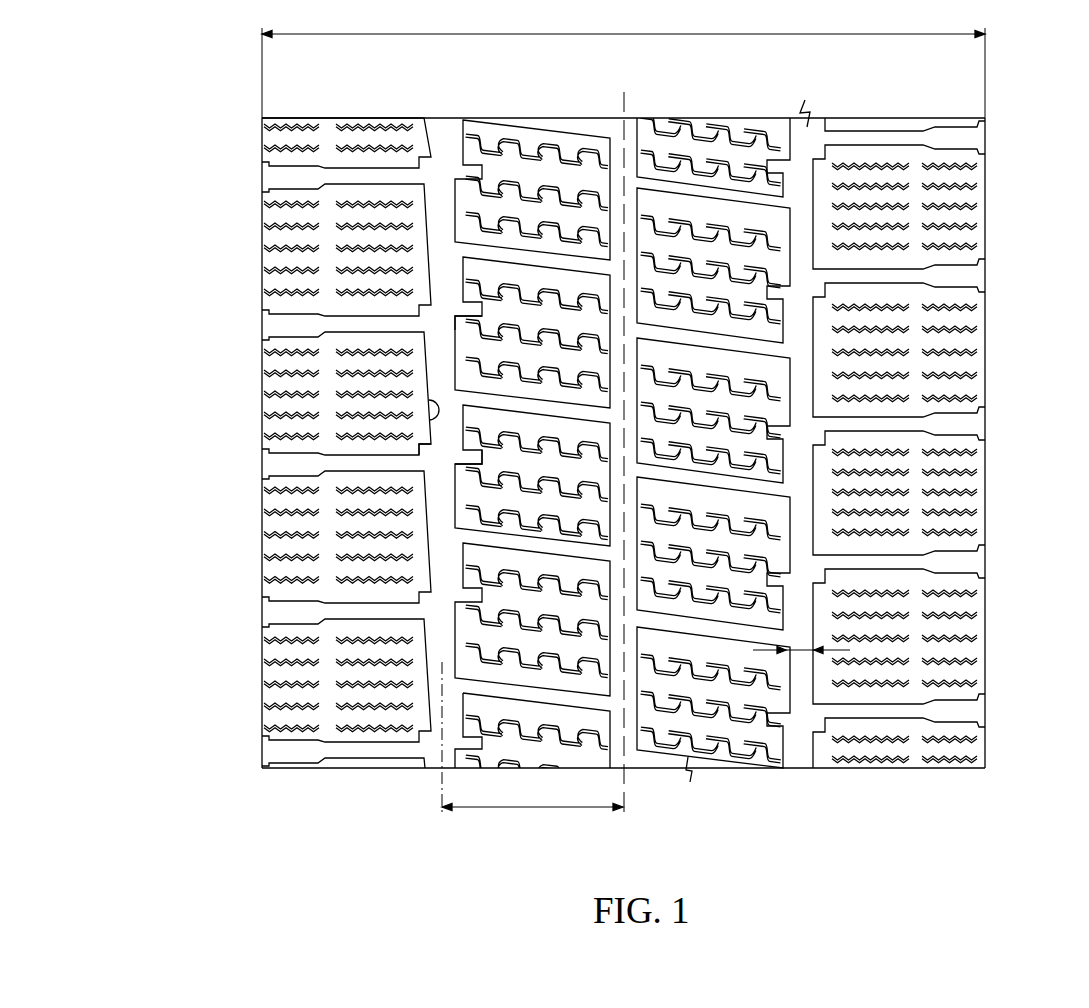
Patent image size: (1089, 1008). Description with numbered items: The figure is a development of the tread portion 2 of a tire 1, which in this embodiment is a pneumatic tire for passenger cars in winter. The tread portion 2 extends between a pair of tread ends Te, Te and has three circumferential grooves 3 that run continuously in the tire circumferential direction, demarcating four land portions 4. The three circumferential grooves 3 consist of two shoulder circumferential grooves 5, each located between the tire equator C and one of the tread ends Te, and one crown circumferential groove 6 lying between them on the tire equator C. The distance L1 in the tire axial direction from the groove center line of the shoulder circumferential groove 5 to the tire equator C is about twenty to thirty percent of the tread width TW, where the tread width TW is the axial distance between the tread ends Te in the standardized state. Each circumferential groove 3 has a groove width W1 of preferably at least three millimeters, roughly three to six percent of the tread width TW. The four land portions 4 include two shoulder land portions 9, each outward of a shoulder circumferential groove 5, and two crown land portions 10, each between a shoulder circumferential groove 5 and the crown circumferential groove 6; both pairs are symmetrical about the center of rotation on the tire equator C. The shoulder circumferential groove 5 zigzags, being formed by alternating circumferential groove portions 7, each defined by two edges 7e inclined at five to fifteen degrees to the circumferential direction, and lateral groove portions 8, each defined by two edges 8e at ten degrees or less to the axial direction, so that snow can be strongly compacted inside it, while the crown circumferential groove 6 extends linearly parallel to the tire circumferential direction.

The tire 1 is at (699, 110).
The tread portion 2 is at (507, 110).
The circumferential groove 3 is at (796, 352).
The land portion 4 is at (862, 156).
The shoulder circumferential groove 5 is at (449, 140).
The crown circumferential groove 6 is at (634, 138).
The circumferential groove portion 7 is at (436, 369).
The edge 7e is at (435, 424).
The lateral groove portion 8 is at (438, 601).
The edge 8e is at (462, 452).
The shoulder land portion 9 is at (915, 156).
The crown land portion 10 is at (723, 146).
The tread end Te is at (985, 170).
The tire equator C is at (624, 436).
The tread width TW is at (623, 59).
The distance L1 is at (532, 824).
The groove width W1 is at (806, 653).